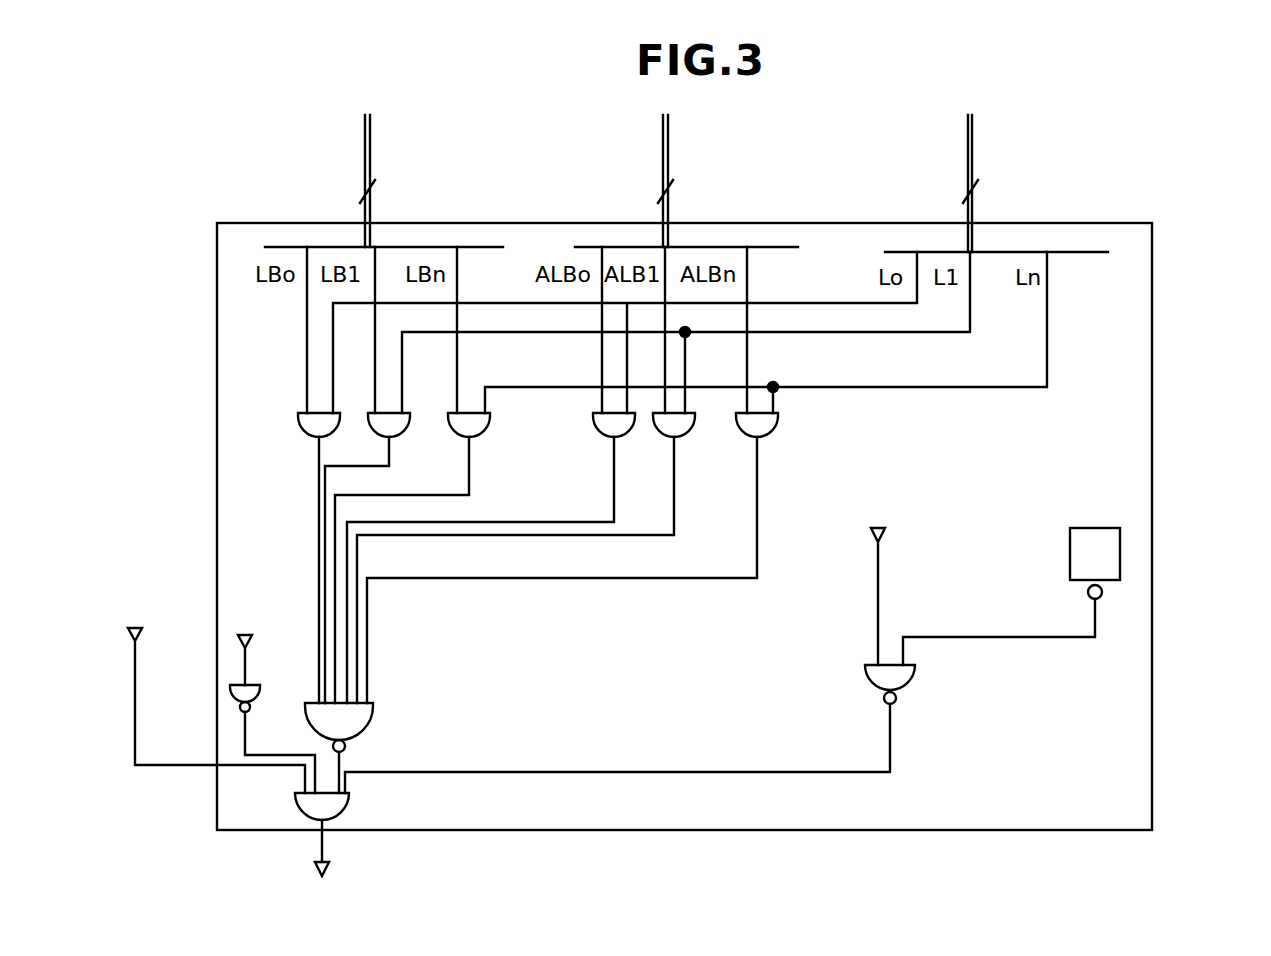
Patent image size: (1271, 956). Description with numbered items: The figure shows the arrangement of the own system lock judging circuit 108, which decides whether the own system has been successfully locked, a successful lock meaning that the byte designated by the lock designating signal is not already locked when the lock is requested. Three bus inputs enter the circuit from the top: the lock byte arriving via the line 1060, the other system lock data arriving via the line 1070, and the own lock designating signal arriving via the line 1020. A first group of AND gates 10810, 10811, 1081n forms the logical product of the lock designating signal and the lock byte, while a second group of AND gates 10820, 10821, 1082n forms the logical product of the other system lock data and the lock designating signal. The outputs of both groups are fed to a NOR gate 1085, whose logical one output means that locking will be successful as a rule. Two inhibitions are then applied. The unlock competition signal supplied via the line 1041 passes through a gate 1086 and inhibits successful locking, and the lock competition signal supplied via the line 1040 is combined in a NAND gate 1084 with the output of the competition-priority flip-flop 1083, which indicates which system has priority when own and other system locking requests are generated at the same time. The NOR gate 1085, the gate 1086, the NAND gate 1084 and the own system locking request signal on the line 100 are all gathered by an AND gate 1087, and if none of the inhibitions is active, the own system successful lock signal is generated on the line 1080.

The own system lock judging circuit 108 is at (1152, 255).
The line 1060 is at (371, 160).
The line 1070 is at (669, 162).
The line 1020 is at (973, 162).
The AND gate 10810 is at (308, 437).
The AND gate 10811 is at (410, 428).
The AND gate 1081n is at (490, 428).
The AND gate 10820 is at (592, 430).
The AND gate 10821 is at (695, 428).
The AND gate 1082n is at (778, 423).
The NOR gate 1085 is at (372, 735).
The inverter gate 1086 is at (258, 698).
The line 1041 is at (245, 680).
The line 100 is at (135, 685).
The AND gate 1087 is at (350, 812).
The line 1080 is at (322, 852).
The line 1040 is at (878, 602).
The flip-flop 1083 is at (1070, 554).
The NAND gate 1084 is at (906, 690).